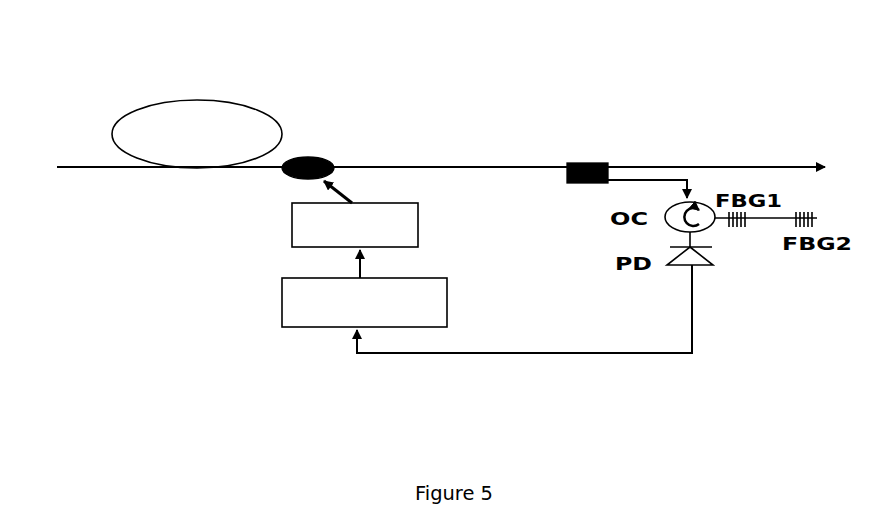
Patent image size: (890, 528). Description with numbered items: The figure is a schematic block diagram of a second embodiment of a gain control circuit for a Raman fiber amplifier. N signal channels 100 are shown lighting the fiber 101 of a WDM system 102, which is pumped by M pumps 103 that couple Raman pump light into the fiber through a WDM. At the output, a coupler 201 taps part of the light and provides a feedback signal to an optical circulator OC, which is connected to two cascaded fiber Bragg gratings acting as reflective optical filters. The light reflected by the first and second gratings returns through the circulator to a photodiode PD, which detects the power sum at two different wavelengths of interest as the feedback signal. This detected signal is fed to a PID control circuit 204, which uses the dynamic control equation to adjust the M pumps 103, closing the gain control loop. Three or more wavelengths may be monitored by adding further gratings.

The signal channels 100 is at (13, 217).
The fiber 101 is at (162, 100).
The WDM system 102 is at (320, 140).
The M pumps 103 is at (355, 198).
The coupler 201 is at (577, 142).
The PID control circuit 204 is at (423, 307).